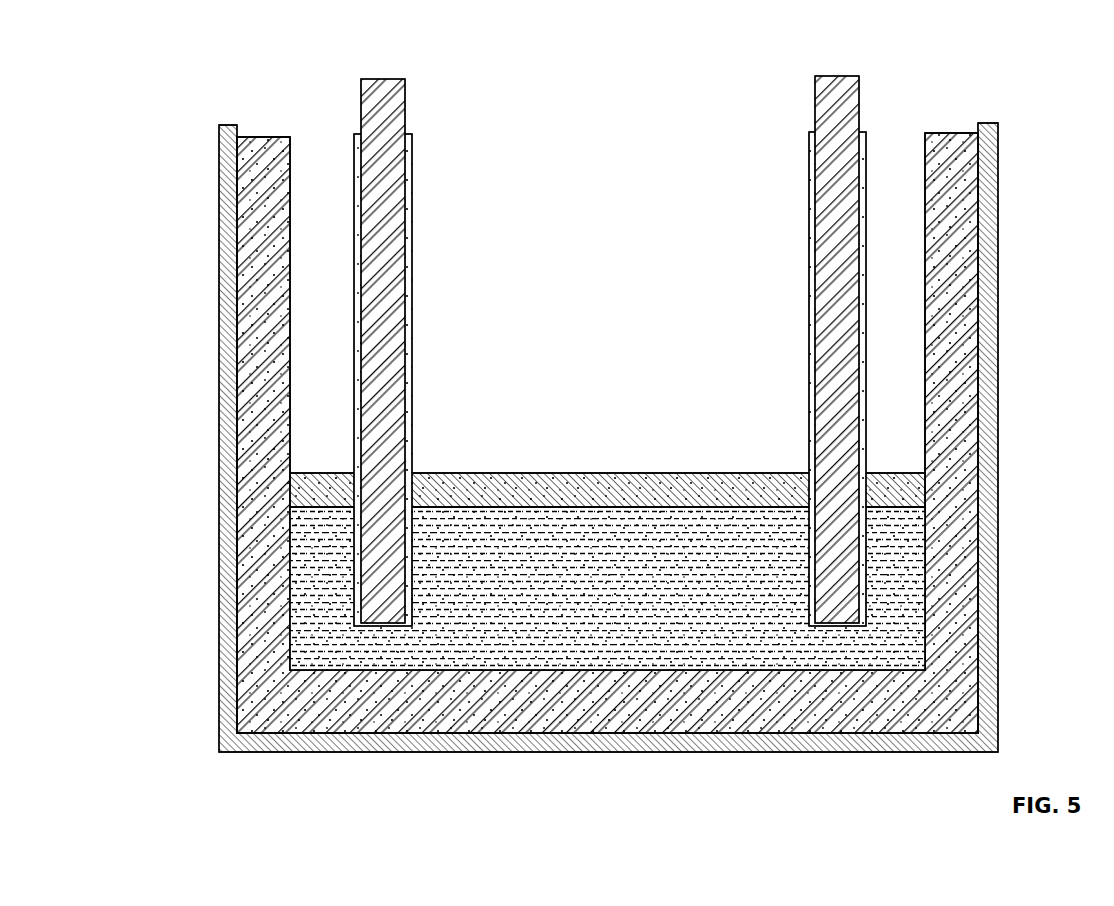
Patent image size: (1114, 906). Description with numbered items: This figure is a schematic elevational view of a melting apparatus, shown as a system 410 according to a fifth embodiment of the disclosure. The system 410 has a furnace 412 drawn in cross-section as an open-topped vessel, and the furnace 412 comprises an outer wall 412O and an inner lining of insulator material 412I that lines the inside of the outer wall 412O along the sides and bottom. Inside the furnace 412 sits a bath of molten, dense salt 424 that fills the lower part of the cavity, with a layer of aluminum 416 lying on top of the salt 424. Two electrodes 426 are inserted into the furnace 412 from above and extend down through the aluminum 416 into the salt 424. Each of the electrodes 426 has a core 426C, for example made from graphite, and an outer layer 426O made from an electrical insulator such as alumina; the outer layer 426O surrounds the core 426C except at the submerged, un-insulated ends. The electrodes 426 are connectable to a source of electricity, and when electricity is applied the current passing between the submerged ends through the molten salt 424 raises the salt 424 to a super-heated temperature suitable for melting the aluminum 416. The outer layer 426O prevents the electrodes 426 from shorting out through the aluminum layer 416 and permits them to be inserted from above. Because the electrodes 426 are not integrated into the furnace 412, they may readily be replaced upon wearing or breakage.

The system 410 is at (592, 419).
The furnace 412 is at (649, 437).
The inner lining of insulator material 412I is at (966, 220).
The outer wall 412O is at (985, 330).
The aluminum 416 is at (593, 492).
The molten, dense salt 424 is at (613, 623).
The electrodes 426 is at (412, 296).
The core 426C is at (795, 341).
The outer layer 426O is at (809, 165).